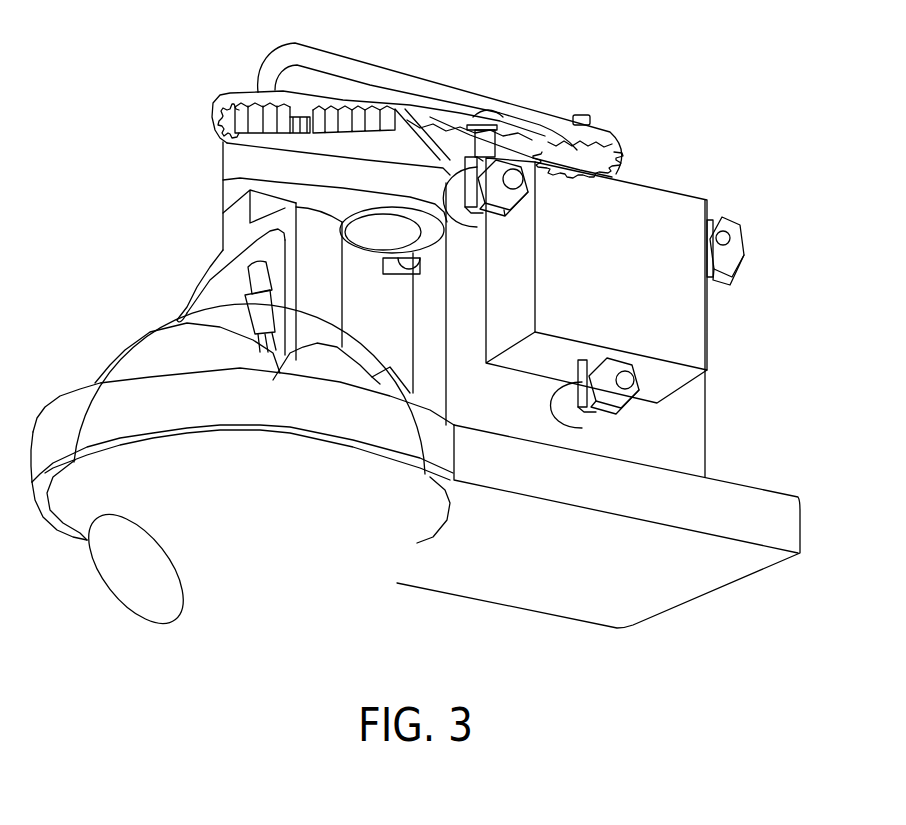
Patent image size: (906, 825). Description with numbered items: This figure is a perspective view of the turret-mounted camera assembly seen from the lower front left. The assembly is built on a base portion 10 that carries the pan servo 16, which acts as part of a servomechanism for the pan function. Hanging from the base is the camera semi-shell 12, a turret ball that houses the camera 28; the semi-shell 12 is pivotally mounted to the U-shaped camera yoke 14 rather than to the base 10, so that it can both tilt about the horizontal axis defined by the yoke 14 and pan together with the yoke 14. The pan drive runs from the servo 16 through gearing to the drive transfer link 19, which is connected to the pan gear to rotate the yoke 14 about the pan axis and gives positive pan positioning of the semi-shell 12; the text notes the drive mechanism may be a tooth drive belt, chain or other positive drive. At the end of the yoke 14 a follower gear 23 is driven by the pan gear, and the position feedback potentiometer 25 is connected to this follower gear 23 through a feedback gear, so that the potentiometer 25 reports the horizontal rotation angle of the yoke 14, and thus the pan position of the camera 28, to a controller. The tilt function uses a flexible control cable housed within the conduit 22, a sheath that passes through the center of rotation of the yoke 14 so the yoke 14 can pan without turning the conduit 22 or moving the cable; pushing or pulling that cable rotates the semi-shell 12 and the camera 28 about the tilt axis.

The base portion 10 is at (657, 597).
The camera semi-shell 12 is at (293, 630).
The camera yoke 14 is at (193, 270).
The pan servo 16 is at (690, 333).
The drive transfer link 19 is at (617, 130).
The conduit 22 is at (383, 75).
The follower gear 23 is at (217, 138).
The position feedback potentiometer 25 is at (378, 233).
The camera 28 is at (128, 570).